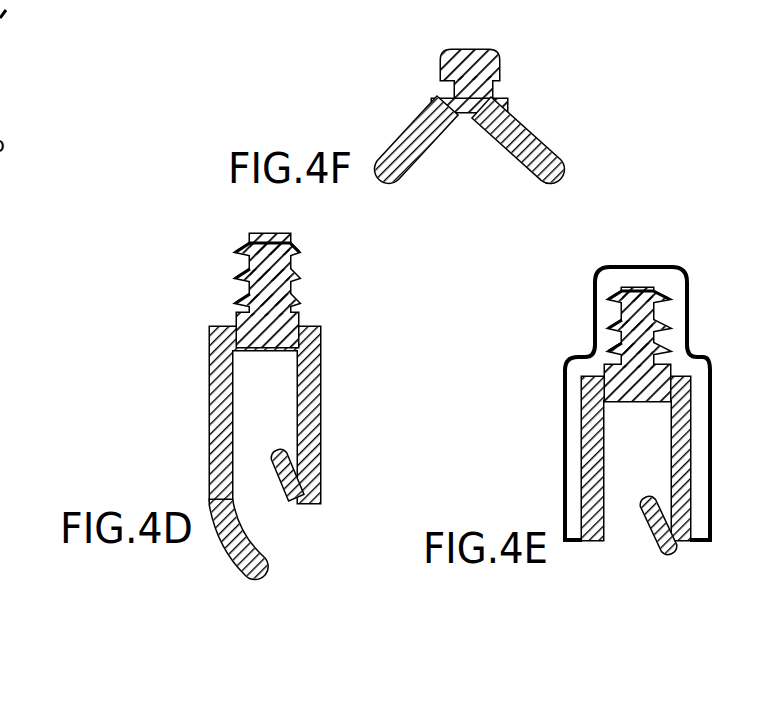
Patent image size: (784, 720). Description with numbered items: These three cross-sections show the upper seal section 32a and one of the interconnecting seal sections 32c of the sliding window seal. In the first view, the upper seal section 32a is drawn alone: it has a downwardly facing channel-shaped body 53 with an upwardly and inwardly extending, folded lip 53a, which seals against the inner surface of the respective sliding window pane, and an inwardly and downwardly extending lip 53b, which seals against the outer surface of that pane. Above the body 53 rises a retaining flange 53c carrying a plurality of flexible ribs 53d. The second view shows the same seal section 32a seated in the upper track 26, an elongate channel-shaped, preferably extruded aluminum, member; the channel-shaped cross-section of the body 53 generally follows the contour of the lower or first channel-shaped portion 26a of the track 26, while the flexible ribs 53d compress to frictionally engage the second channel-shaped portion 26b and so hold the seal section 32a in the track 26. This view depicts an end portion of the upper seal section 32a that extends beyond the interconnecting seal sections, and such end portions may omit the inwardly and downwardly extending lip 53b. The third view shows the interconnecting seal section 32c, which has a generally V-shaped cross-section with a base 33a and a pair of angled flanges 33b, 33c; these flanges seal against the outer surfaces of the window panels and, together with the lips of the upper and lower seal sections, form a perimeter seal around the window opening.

In FIG. 4E, the upper guide track 26 is at (614, 403).
In FIG. 4E, the first channel-shaped portion 26a is at (565, 470).
In FIG. 4E, the second channel-shaped portion 26b is at (688, 333).
In FIG. 4D, the upper seal section 32a is at (326, 387).
In FIG. 4E, the upper seal section 32a is at (693, 442).
In FIG. 4F, the interconnecting seal section 32c is at (534, 104).
In FIG. 4F, the base 33a is at (492, 57).
In FIG. 4F, the angled flange 33b is at (386, 150).
In FIG. 4F, the angled flange 33c is at (548, 140).
In FIG. 4D, the channel-shaped body 53 is at (241, 326).
In FIG. 4E, the channel-shaped body 53 is at (671, 301).
In FIG. 4D, the upwardly and inwardly extending lip 53a is at (290, 452).
In FIG. 4E, the upwardly and inwardly extending lip 53a is at (655, 535).
In FIG. 4D, the inwardly and downwardly extending lip 53b is at (260, 565).
In FIG. 4D, the retaining flange 53c is at (257, 236).
In FIG. 4E, the retaining flange 53c is at (640, 290).
In FIG. 4D, the flexible ribs 53d is at (296, 302).
In FIG. 4E, the flexible ribs 53d is at (668, 298).